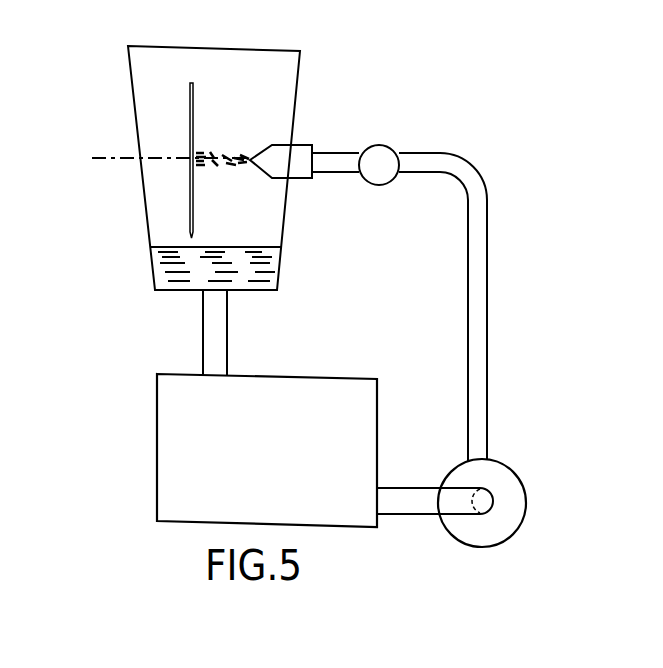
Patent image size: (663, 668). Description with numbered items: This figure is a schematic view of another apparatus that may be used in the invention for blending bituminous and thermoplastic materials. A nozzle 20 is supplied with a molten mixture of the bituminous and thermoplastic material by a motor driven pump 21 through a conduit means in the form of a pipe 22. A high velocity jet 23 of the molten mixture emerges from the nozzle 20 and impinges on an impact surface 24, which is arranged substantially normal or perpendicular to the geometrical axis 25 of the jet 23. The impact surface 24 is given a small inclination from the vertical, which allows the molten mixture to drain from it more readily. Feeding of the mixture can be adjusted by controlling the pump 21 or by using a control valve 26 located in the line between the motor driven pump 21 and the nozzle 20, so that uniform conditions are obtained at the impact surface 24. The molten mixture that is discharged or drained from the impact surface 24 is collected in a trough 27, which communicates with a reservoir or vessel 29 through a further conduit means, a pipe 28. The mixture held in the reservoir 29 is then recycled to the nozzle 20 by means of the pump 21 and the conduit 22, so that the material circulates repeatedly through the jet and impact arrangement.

The nozzle 20 is at (298, 153).
The motor driven pump 21 is at (480, 547).
The pipe 22 is at (484, 309).
The high velocity jet 23 is at (222, 160).
The impact surface 24 is at (193, 97).
The geometrical axis 25 is at (101, 157).
The control valve 26 is at (386, 147).
The trough 27 is at (282, 227).
The pipe 28 is at (228, 334).
The reservoir 29 is at (331, 379).